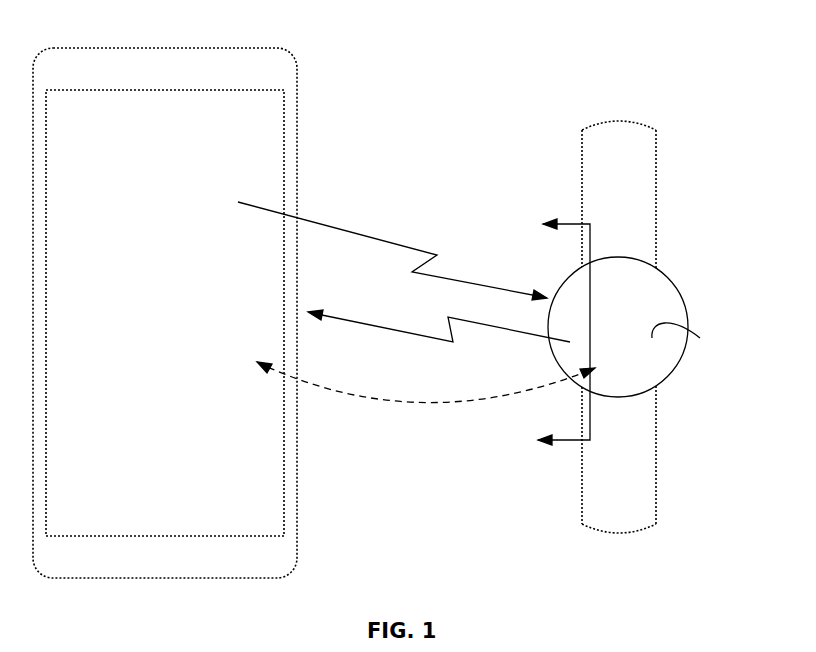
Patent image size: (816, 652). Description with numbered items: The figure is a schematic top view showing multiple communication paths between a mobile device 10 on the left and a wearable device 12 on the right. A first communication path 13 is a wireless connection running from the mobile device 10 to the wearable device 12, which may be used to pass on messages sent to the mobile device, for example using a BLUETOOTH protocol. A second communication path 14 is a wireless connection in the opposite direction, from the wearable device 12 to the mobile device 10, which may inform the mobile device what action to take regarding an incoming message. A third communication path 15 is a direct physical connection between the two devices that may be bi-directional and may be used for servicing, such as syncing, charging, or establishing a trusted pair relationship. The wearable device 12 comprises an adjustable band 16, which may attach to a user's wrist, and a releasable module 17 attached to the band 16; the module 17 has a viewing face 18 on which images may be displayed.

The mobile device 10 is at (316, 63).
The wearable device 12 is at (652, 327).
The first communication path 13 is at (392, 251).
The second communication path 14 is at (439, 326).
The third communication path 15 is at (426, 382).
The adjustable band 16 is at (645, 180).
The releasable module 17 is at (667, 362).
The viewing face 18 is at (700, 338).